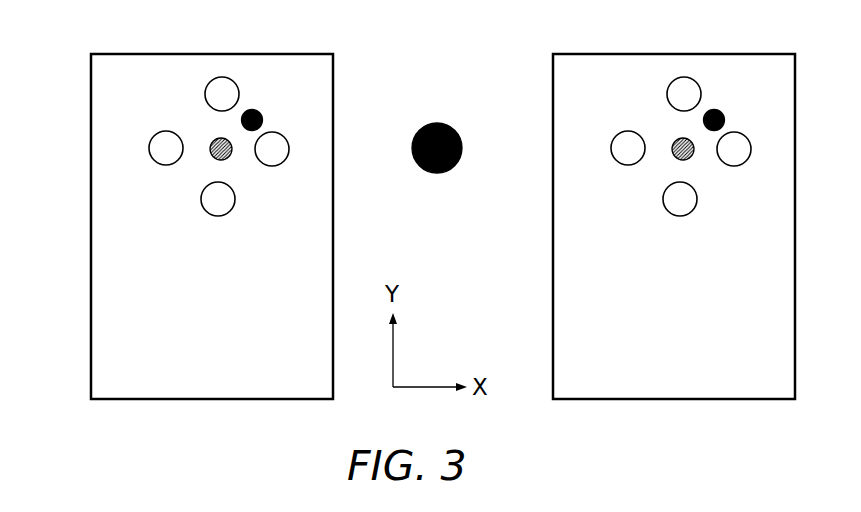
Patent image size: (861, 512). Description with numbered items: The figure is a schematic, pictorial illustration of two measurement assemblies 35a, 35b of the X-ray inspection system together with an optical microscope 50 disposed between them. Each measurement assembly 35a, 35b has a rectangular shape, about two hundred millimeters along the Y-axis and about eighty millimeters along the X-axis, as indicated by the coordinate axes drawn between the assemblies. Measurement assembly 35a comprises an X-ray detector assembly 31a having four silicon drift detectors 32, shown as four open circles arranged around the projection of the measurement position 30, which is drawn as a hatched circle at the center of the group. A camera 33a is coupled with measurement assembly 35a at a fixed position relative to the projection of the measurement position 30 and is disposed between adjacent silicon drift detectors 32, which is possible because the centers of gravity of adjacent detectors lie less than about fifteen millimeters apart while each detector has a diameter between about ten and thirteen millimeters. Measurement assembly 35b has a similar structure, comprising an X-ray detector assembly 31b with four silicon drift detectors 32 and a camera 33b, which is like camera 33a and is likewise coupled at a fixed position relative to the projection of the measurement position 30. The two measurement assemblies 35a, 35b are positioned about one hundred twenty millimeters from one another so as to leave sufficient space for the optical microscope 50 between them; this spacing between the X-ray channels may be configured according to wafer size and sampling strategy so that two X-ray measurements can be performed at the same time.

The measurement position 30 is at (230, 160).
The X-ray detector assembly 31a is at (174, 226).
The X-ray detector assembly 31b is at (636, 226).
The silicon drift detector 32 is at (222, 77).
The camera 33a is at (255, 109).
The camera 33b is at (717, 109).
The measurement assembly 35a is at (90, 191).
The measurement assembly 35b is at (552, 191).
The optical microscope 50 is at (438, 122).